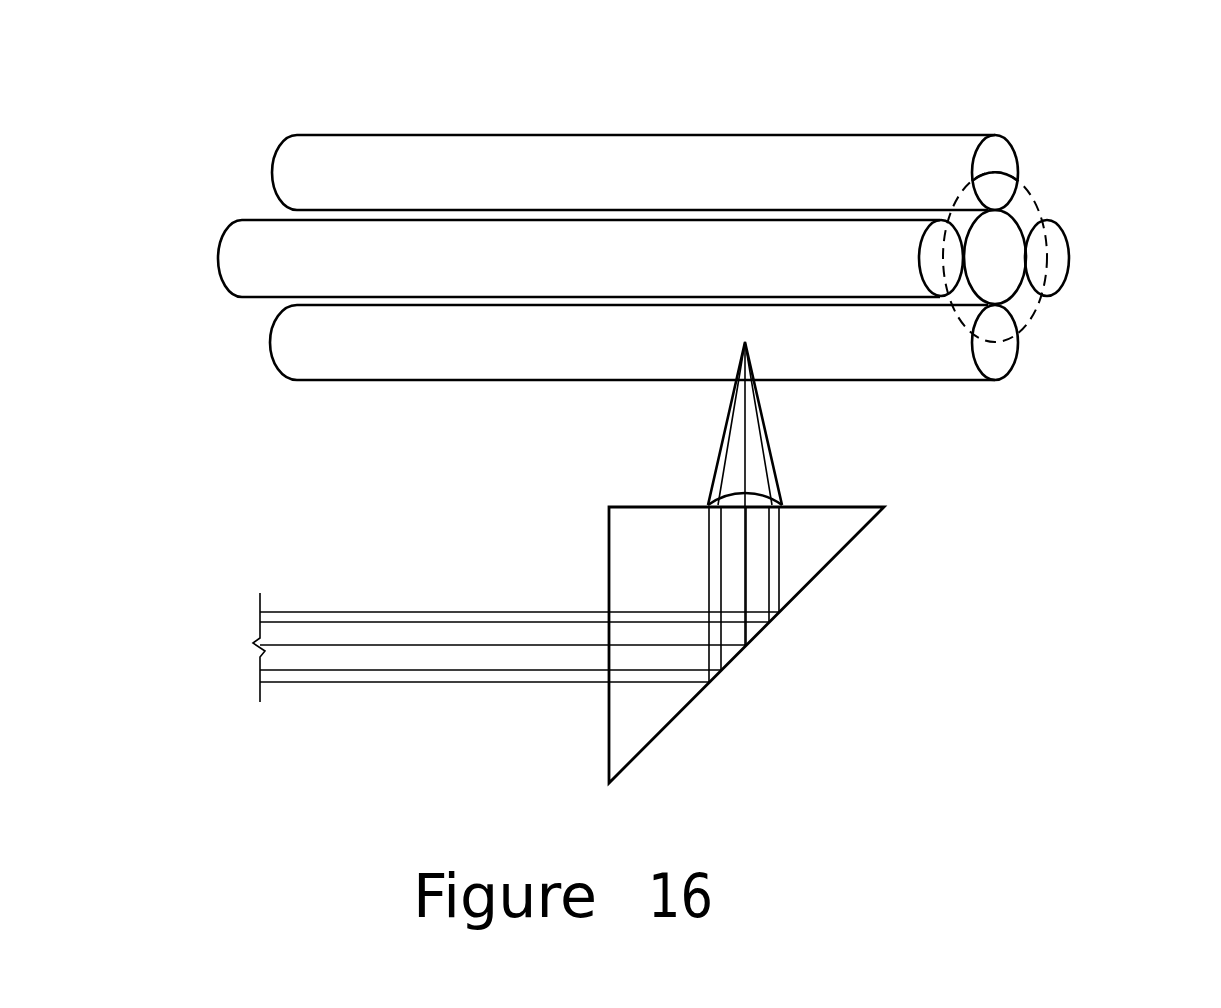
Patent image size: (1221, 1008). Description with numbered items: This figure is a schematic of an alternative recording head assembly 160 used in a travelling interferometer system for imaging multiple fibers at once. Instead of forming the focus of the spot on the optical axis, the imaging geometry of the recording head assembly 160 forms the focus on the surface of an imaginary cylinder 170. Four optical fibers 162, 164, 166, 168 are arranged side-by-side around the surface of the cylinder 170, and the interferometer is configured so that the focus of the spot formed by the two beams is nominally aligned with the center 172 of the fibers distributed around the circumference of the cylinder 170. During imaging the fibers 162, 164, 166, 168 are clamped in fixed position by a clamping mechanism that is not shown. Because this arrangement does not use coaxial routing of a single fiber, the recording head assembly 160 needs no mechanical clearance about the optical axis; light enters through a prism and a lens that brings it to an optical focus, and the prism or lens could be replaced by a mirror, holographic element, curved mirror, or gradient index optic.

The recording head assembly 160 is at (610, 710).
The optical fiber 162 is at (477, 381).
The optical fiber 164 is at (1070, 245).
The optical fiber 166 is at (657, 135).
The optical fiber 168 is at (463, 221).
The cylinder 170 is at (1010, 212).
The center of the fibers 172 is at (747, 343).